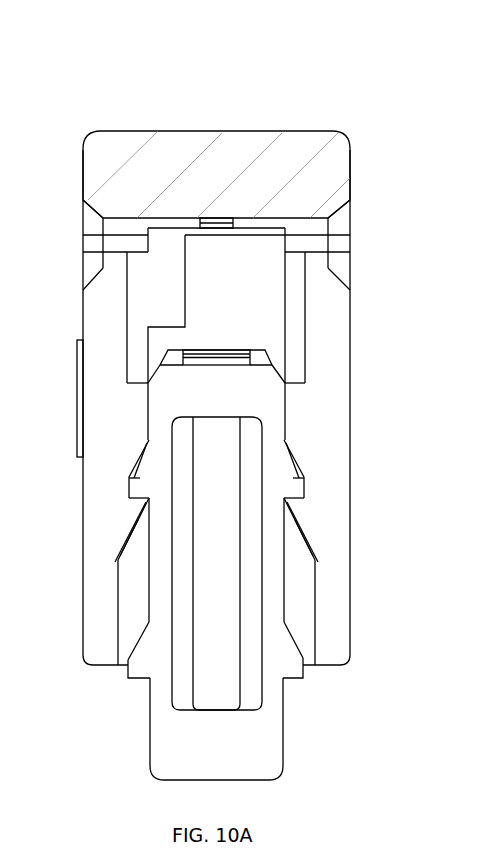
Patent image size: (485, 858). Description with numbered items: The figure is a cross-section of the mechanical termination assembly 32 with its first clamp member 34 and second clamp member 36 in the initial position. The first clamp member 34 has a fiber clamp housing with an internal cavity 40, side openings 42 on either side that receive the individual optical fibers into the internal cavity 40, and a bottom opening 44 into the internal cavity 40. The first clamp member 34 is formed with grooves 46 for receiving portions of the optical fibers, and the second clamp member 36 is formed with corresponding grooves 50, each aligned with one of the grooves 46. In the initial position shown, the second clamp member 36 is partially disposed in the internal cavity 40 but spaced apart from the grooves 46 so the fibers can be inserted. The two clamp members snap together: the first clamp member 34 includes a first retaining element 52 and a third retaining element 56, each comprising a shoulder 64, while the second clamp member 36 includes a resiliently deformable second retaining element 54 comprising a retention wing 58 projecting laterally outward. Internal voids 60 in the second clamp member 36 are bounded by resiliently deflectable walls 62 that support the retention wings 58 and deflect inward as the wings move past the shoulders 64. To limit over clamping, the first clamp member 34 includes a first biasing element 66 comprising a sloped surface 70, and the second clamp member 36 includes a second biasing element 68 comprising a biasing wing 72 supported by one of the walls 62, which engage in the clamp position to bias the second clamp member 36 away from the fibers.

The mechanical termination assembly 32 is at (102, 68).
The first clamp member 34 is at (225, 152).
The second clamp member 36 is at (178, 745).
The internal cavity 40 is at (220, 287).
The side openings 42 is at (93, 220).
The bottom opening 44 is at (313, 665).
The grooves 46 is at (162, 223).
The grooves 50 is at (215, 358).
The first retaining element 52 is at (122, 360).
The second retaining element 54 is at (122, 489).
The third retaining element 56 is at (122, 510).
The retention wing 58 is at (140, 480).
The internal void 60 is at (192, 599).
The walls 62 is at (150, 577).
The shoulder 64 is at (128, 383).
The first biasing element 66 is at (114, 562).
The second biasing element 68 is at (129, 689).
The sloped surface 70 is at (305, 547).
The biasing wing 72 is at (130, 672).